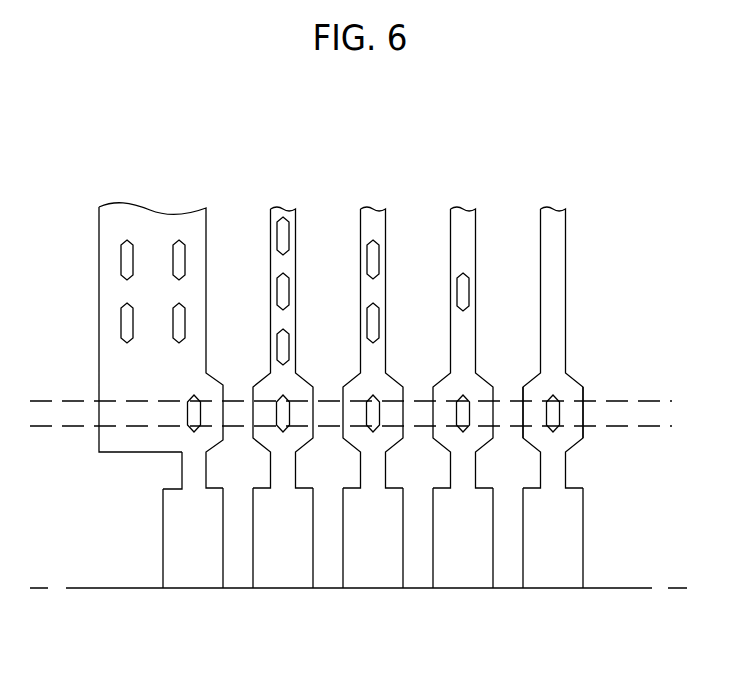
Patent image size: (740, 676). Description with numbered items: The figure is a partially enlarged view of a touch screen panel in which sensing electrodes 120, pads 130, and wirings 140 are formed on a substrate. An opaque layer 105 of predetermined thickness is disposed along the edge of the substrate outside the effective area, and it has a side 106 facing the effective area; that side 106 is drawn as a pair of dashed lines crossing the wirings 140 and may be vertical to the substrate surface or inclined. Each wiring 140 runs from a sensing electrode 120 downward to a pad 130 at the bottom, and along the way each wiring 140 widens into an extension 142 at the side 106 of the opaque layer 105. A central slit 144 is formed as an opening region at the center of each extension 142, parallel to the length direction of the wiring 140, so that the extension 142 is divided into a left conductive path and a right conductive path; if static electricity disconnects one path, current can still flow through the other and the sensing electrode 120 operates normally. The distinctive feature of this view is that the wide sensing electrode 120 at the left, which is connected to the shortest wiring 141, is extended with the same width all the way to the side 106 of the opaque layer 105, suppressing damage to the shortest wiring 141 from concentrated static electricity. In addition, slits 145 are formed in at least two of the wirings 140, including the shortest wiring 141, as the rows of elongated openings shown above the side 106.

The opaque layer 105 is at (609, 577).
The side 106 is at (612, 410).
The sensing electrode 120 is at (110, 222).
The pad 130 is at (200, 577).
The wiring 140 is at (550, 232).
The shortest wiring 141 is at (193, 473).
The extension 142 is at (573, 413).
The central slit 144 is at (550, 430).
The slit 145 is at (127, 318).